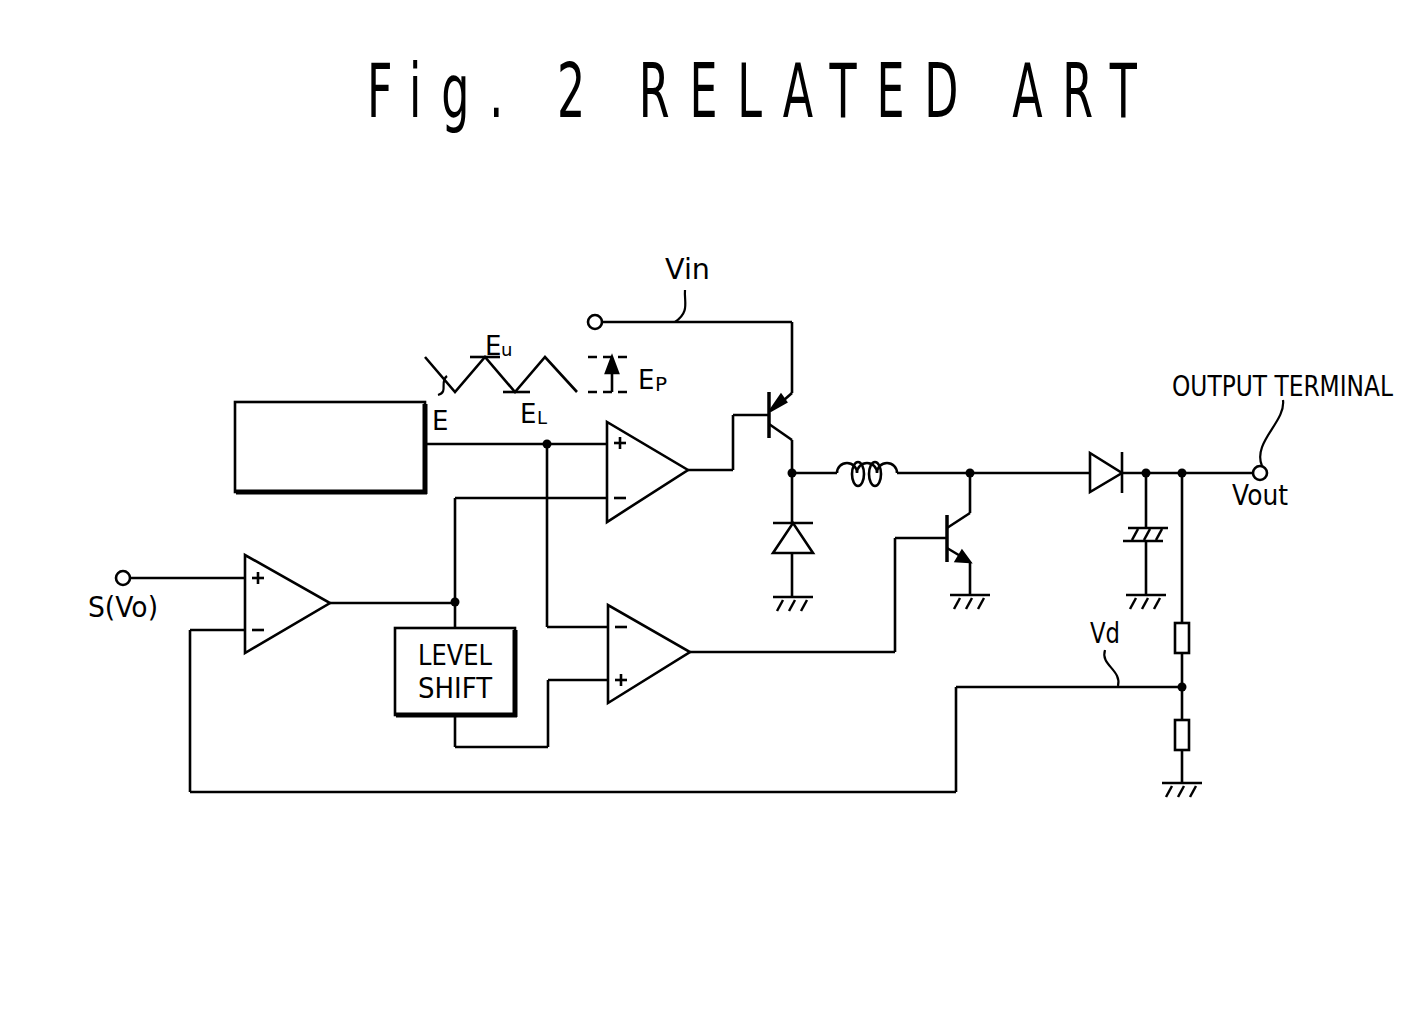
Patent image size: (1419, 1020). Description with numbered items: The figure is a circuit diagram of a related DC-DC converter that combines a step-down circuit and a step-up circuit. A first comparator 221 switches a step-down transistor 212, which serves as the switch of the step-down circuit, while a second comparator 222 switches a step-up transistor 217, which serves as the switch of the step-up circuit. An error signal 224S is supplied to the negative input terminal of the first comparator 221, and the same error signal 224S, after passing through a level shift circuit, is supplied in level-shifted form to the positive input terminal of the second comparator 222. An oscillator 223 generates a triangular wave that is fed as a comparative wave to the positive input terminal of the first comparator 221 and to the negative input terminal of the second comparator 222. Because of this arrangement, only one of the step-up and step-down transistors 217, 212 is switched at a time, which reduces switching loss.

The oscillator 223 is at (235, 445).
The error signal 224S is at (378, 603).
The first comparator 221 is at (668, 488).
The second comparator 222 is at (665, 618).
The step-down transistor 212 is at (785, 412).
The step-up transistor 217 is at (960, 535).